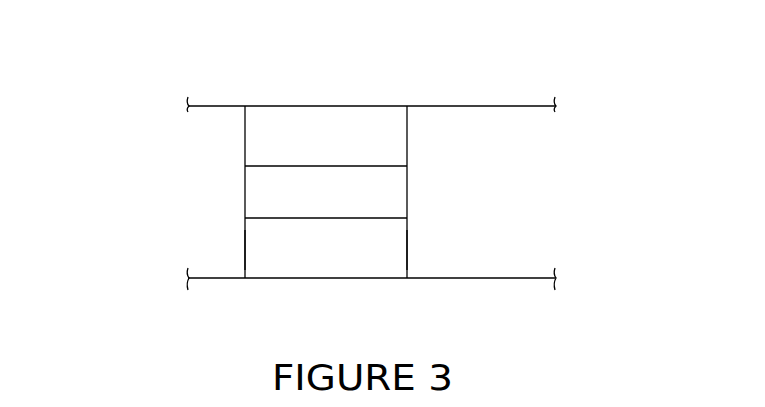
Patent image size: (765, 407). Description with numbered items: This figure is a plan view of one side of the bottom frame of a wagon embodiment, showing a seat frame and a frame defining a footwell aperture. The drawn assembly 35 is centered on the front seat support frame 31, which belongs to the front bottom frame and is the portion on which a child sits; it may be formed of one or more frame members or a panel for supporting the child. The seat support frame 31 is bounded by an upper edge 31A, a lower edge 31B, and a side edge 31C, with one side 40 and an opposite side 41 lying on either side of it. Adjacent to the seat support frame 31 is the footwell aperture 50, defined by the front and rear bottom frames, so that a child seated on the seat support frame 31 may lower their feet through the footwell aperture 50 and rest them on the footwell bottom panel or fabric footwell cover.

The system assembly 35 is at (128, 70).
The front seat support frame 31 is at (397, 186).
The top surface of substrate 31A is at (468, 106).
The bottom surface of substrate 31B is at (530, 280).
The side edge of substrate 31C is at (424, 158).
The first side 40 is at (245, 242).
The second side 41 is at (408, 242).
The footwell aperture 50 is at (543, 231).